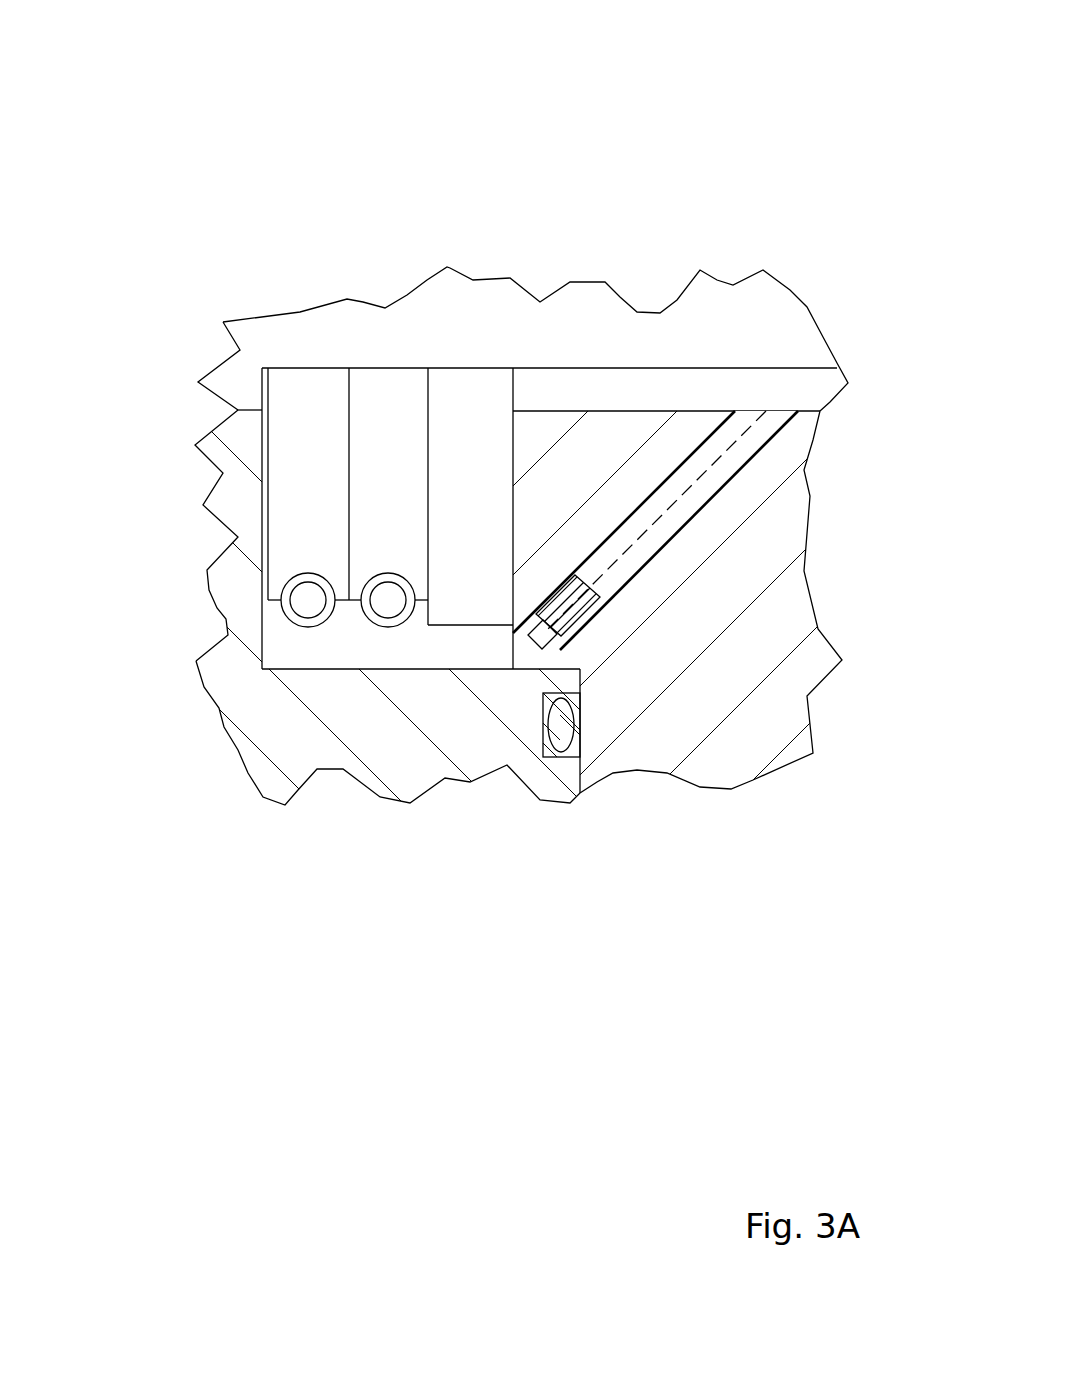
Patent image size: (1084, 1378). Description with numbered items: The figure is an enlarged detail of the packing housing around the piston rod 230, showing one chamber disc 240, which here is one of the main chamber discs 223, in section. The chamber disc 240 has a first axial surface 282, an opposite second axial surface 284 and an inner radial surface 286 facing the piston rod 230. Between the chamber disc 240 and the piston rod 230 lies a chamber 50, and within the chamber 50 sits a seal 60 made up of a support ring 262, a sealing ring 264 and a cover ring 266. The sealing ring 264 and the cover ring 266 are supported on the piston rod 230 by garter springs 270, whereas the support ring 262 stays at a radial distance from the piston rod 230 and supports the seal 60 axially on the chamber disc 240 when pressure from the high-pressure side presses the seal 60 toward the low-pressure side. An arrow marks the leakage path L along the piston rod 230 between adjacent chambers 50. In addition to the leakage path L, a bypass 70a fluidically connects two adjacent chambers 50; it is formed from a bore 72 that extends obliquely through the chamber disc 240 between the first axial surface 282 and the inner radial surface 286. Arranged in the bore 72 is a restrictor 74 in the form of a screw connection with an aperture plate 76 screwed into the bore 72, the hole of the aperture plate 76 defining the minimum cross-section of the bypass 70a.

The chamber 50 is at (757, 383).
The seal 60 is at (497, 340).
The bypass 70a is at (685, 442).
The bore 72 is at (722, 480).
The restrictor 74 is at (590, 650).
The aperture plate 76 is at (587, 613).
The leakage path L is at (248, 372).
The main chamber disc 223 is at (224, 682).
The chamber disc 240 is at (747, 752).
The piston rod 230 is at (702, 298).
The support ring 262 is at (465, 400).
The sealing ring 264 is at (383, 397).
The cover ring 266 is at (299, 474).
The garter spring 270 is at (387, 573).
The first axial surface 282 is at (511, 592).
The second axial surface 284 is at (263, 637).
The inner radial surface 286 is at (624, 411).